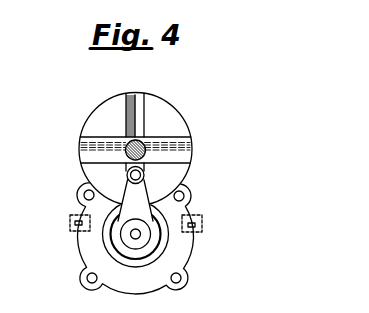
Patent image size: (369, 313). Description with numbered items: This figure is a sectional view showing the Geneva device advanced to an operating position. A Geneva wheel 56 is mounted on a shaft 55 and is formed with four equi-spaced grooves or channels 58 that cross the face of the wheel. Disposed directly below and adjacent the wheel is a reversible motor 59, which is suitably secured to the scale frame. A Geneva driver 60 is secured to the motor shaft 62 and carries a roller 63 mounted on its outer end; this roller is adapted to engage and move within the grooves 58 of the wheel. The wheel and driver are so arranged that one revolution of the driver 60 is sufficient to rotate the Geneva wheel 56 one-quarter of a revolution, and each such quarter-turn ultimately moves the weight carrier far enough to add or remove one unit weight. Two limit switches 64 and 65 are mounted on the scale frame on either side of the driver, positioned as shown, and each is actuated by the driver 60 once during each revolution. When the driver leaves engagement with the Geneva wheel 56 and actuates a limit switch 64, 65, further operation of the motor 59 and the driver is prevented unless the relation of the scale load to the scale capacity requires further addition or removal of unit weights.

The shaft 55 is at (145, 146).
The Geneva wheel 56 is at (161, 110).
The grooves 58 is at (137, 96).
The reversible motor 59 is at (184, 252).
The Geneva driver 60 is at (126, 186).
The motor shaft 62 is at (140, 232).
The roller 63 is at (128, 173).
The limit switch 64 is at (78, 223).
The limit switch 65 is at (198, 223).